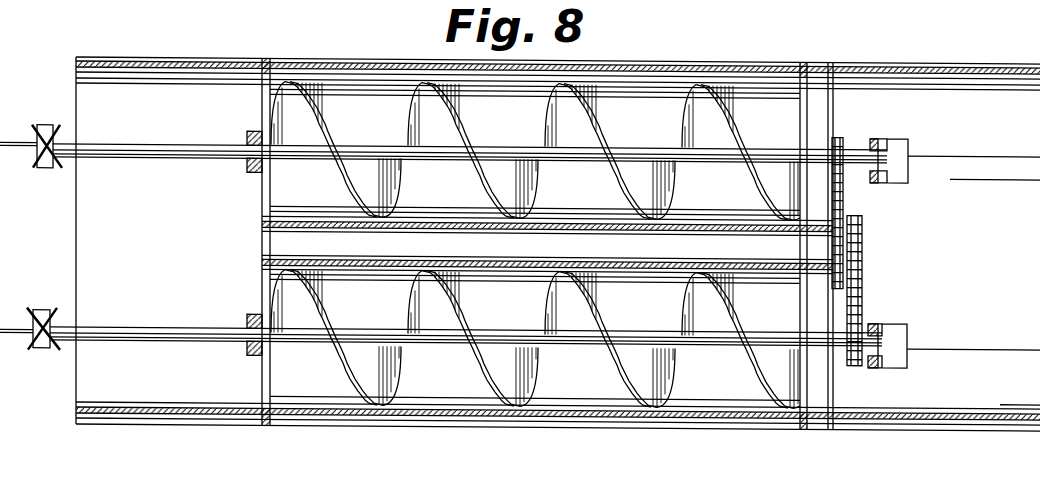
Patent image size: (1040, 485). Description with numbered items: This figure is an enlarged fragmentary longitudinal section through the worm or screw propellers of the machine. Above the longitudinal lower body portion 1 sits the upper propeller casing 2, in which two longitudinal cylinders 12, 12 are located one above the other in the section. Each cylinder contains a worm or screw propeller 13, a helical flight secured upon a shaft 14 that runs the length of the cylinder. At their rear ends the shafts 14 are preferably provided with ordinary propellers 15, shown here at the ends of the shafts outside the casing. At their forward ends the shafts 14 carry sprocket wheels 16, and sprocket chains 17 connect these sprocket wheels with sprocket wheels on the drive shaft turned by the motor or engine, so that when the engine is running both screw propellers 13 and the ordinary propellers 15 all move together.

The longitudinal lower body portion 1 is at (978, 336).
The upper propeller casing 2 is at (322, 425).
The longitudinal cylinder 12 is at (605, 412).
The worm or screw propeller 13 is at (422, 110).
The shaft 14 is at (170, 147).
The ordinary propeller 15 is at (35, 125).
The sprocket wheel 16 is at (837, 135).
The sprocket chain 17 is at (848, 188).